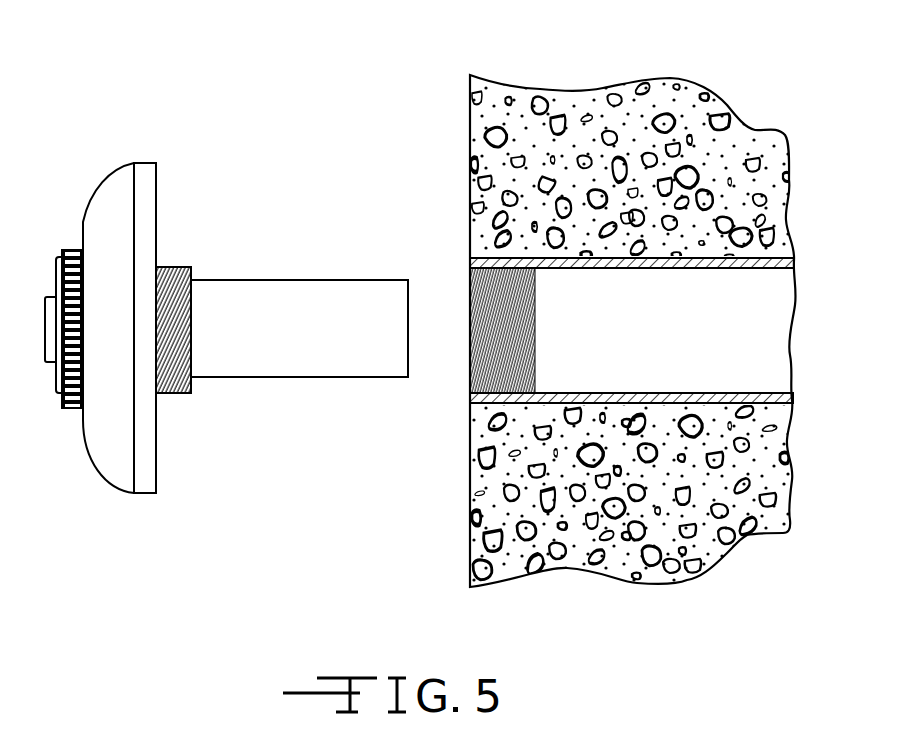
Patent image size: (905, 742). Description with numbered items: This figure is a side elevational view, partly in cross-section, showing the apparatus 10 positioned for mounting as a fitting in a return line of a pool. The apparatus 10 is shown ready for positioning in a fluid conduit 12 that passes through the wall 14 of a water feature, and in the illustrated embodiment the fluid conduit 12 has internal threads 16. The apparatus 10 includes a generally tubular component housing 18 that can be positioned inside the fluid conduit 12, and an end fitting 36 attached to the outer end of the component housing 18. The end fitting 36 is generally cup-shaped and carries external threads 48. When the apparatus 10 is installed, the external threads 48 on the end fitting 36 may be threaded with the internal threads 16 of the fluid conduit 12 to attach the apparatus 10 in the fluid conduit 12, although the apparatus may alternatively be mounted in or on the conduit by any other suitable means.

The apparatus 10 is at (106, 150).
The fluid conduit 12 is at (664, 342).
The wall 14 is at (522, 100).
The internal threads 16 is at (468, 276).
The component housing 18 is at (253, 280).
The end fitting 36 is at (63, 408).
The external threads 48 is at (177, 267).